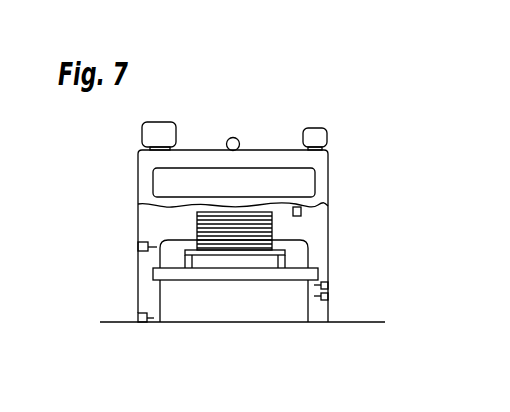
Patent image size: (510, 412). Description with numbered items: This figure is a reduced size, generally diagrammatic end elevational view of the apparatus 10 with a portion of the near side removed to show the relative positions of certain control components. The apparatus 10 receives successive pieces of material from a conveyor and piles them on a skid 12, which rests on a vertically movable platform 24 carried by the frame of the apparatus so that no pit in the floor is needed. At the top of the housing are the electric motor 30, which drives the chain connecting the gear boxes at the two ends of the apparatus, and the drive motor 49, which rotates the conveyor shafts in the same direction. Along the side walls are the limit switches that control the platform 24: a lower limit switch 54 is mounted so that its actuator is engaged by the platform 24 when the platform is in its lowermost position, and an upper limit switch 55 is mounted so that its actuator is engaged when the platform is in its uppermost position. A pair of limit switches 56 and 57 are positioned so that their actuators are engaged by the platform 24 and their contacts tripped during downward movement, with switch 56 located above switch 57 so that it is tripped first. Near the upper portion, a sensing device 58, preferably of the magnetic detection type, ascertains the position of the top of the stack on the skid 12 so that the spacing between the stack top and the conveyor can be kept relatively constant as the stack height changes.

The apparatus 10 is at (259, 149).
The electric motor 30 is at (158, 134).
The drive motor 49 is at (315, 136).
The platform structure 24 is at (200, 273).
The skid 12 is at (250, 250).
The sensing device 58 is at (301, 211).
The upper limit switch 55 is at (138, 247).
The lower limit switch 54 is at (138, 318).
The limit switch 56 is at (328, 284).
The limit switch 57 is at (329, 296).